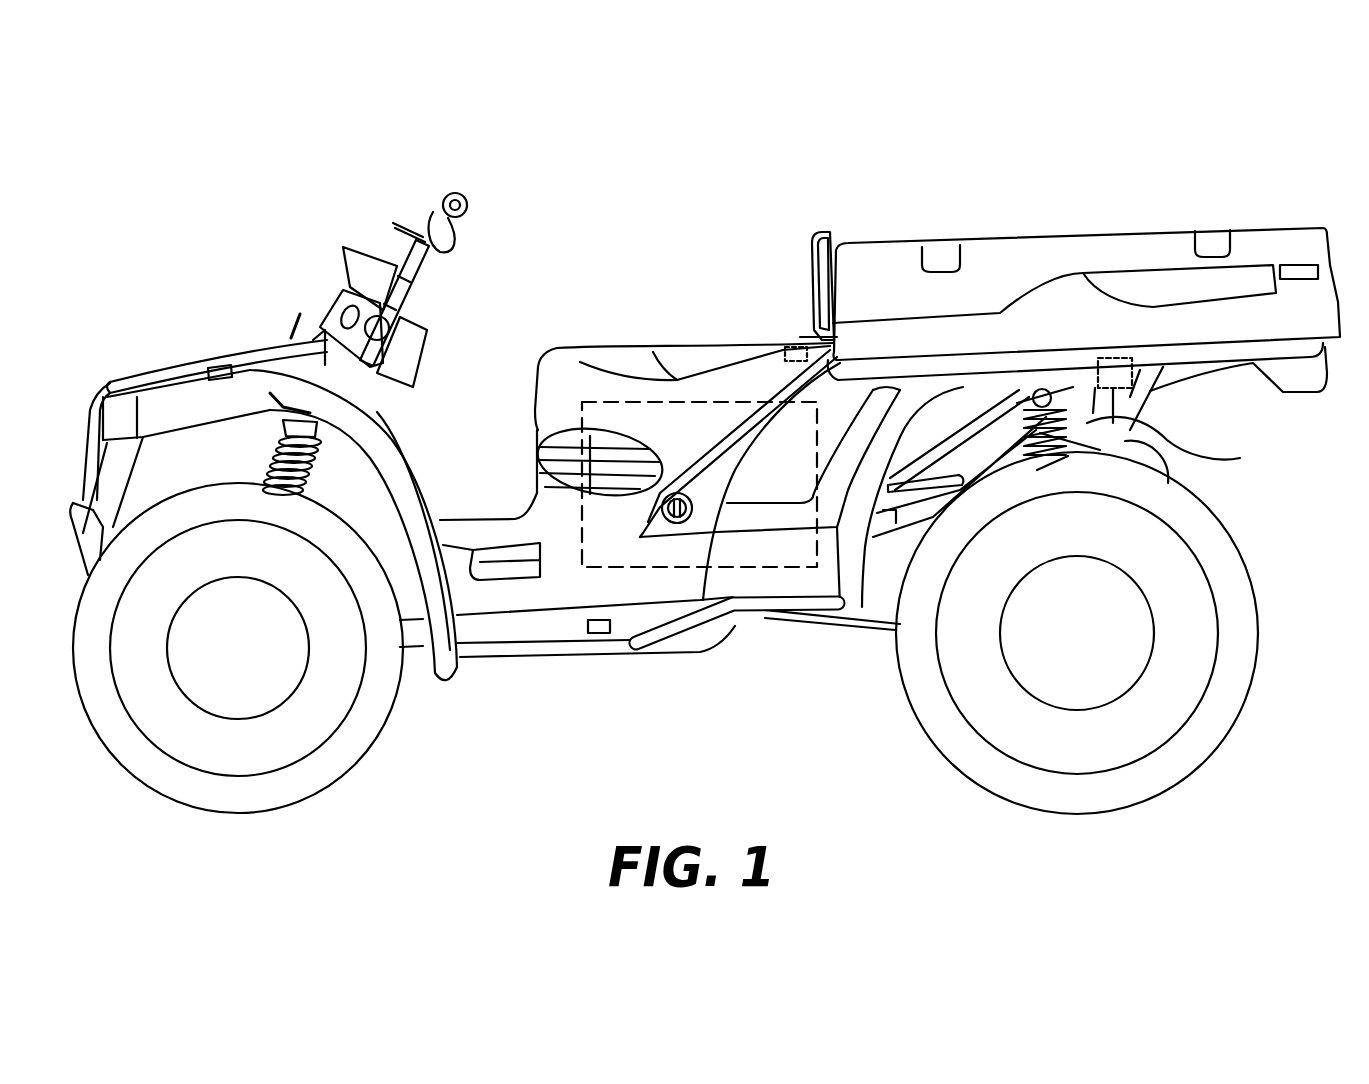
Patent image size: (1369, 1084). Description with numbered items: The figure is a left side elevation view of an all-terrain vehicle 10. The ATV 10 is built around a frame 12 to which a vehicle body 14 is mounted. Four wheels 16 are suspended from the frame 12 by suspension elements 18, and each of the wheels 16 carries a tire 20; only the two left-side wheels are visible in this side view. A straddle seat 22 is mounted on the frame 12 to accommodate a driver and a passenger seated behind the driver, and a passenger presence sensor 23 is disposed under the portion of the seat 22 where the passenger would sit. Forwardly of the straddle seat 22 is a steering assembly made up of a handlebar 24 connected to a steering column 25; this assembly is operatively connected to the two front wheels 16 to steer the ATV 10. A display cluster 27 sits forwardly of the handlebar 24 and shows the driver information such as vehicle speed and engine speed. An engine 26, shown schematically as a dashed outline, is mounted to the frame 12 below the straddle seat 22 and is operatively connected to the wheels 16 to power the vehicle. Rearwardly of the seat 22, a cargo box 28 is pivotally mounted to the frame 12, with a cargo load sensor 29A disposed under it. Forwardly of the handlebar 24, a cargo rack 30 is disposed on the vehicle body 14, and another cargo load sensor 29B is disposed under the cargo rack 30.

The all-terrain vehicle 10 is at (752, 185).
The frame 12 is at (877, 612).
The vehicle body 14 is at (175, 405).
The wheels 16 is at (290, 733).
The suspension elements 18 is at (290, 378).
The tire 20 is at (152, 765).
The straddle seat 22 is at (655, 350).
The passenger presence sensor 23 is at (789, 345).
The handlebar 24 is at (463, 208).
The steering column 25 is at (393, 250).
The engine 26 is at (742, 568).
The display cluster 27 is at (345, 262).
The cargo box 28 is at (1182, 229).
The cargo load sensor 29A is at (1105, 356).
The cargo load sensor 29B is at (220, 366).
The cargo rack 30 is at (140, 375).